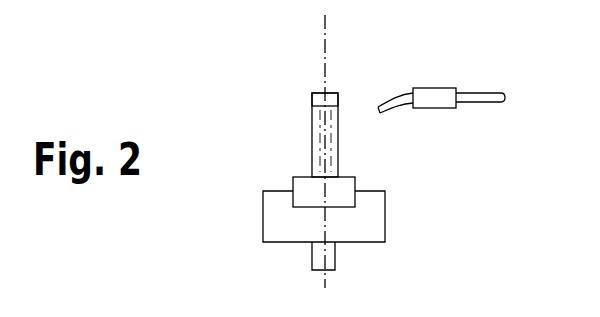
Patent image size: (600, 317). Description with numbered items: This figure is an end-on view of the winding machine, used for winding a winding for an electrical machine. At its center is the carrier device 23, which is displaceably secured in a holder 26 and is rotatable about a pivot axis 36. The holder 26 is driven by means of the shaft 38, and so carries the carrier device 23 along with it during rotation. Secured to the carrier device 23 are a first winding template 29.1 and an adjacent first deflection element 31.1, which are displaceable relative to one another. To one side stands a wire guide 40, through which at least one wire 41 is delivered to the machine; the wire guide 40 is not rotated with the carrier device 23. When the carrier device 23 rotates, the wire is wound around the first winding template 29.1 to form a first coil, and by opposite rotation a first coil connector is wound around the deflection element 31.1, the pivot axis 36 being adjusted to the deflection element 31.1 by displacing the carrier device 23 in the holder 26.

The pivot axis 36 is at (325, 32).
The first deflection element 31.1 is at (312, 103).
The first winding template 29.1 is at (320, 143).
The carrier device 23 is at (310, 186).
The holder 26 is at (283, 216).
The shaft 38 is at (329, 255).
The wire guide 40 is at (437, 97).
The wire 41 is at (485, 99).